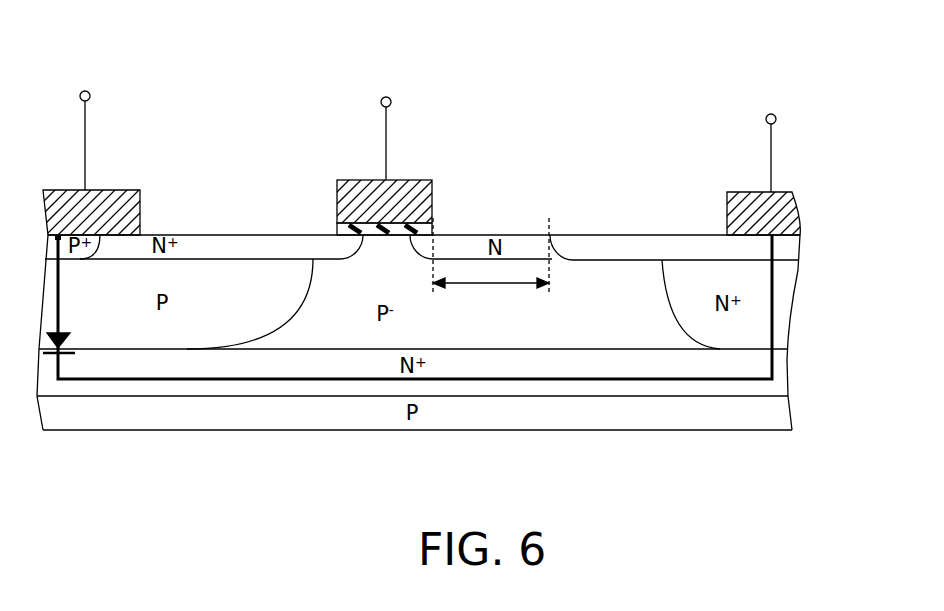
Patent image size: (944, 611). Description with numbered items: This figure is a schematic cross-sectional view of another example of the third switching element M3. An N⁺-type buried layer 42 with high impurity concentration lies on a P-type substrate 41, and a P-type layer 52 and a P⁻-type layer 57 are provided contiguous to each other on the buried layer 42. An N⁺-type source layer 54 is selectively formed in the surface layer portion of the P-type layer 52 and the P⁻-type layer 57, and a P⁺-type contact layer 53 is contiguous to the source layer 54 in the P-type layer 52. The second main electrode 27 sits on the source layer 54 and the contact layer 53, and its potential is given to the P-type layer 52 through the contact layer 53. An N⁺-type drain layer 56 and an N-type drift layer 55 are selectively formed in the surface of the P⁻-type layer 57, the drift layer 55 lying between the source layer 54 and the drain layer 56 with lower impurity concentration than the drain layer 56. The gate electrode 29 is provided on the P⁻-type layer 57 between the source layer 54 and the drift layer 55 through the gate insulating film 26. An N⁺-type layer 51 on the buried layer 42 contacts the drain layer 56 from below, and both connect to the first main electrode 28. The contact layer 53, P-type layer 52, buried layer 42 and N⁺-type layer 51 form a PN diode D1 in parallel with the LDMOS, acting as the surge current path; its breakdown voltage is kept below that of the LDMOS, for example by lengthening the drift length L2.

The gate insulating film 26 is at (345, 220).
The second main electrode 27 is at (122, 210).
The first main electrode 28 is at (785, 200).
The gate electrode 29 is at (405, 190).
The P-type substrate 41 is at (340, 408).
The N⁺-type buried layer 42 is at (492, 365).
The N⁺-type layer 51 is at (685, 275).
The P-type layer 52 is at (205, 275).
The P⁺-type contact layer 53 is at (55, 248).
The N⁺-type source layer 54 is at (253, 248).
The N-type drift layer 55 is at (461, 250).
The N⁺-type drain layer 56 is at (581, 250).
The P⁻-type layer 57 is at (613, 337).
The third switching element M3 is at (462, 61).
The PN diode D1 is at (407, 307).
The length of the drift layer L2 is at (491, 267).